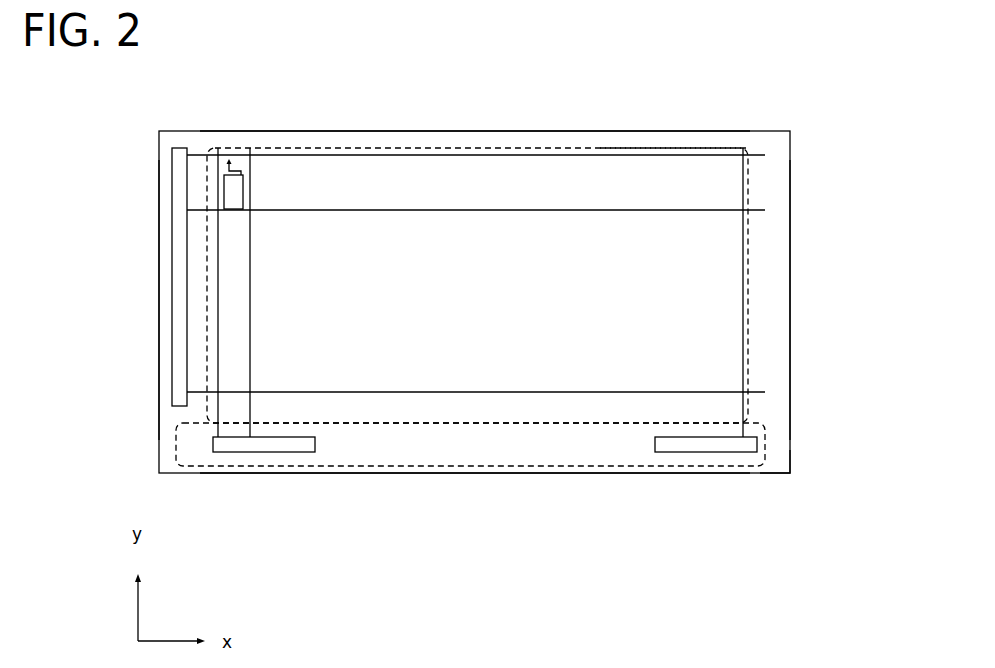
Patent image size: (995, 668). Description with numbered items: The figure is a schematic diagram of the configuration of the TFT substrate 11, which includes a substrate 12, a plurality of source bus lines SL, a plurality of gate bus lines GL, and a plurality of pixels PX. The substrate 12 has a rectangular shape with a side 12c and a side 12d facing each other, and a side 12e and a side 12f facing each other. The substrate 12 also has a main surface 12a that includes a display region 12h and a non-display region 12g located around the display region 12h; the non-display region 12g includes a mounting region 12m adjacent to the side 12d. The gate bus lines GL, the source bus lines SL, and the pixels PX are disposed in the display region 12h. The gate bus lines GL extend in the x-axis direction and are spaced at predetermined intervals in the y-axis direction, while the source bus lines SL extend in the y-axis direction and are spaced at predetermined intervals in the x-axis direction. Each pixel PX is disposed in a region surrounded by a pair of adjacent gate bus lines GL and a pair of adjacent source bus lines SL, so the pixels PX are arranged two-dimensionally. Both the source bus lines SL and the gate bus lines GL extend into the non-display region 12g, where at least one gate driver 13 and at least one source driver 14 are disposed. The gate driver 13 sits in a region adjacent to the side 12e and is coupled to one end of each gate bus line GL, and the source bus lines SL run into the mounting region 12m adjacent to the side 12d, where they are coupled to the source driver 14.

The TFT substrate 11 is at (811, 95).
The substrate 12 is at (565, 131).
The main surface 12a is at (428, 154).
The side 12c is at (504, 122).
The side (third side) 12d is at (490, 480).
The side 12e is at (151, 298).
The side 12f is at (797, 285).
The non-display region 12g is at (772, 473).
The display region 12h is at (692, 148).
The mounting region 12m is at (585, 468).
The gate driver 13 is at (177, 341).
The source driver 14 is at (255, 448).
The gate bus line GL is at (196, 146).
The source bus line SL is at (219, 288).
The pixel PX is at (259, 164).